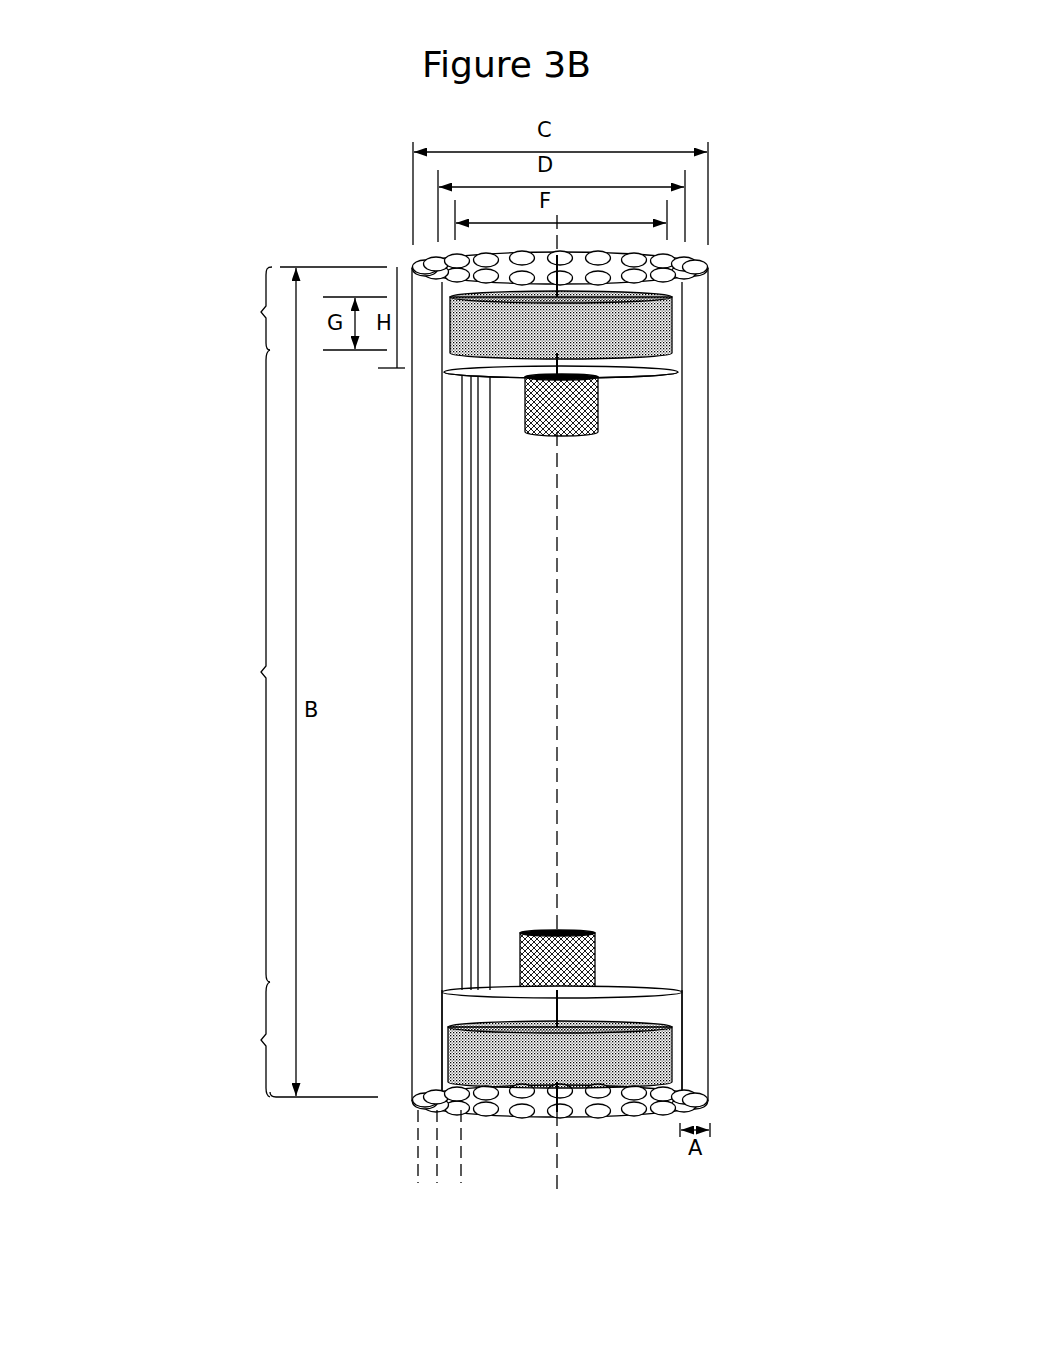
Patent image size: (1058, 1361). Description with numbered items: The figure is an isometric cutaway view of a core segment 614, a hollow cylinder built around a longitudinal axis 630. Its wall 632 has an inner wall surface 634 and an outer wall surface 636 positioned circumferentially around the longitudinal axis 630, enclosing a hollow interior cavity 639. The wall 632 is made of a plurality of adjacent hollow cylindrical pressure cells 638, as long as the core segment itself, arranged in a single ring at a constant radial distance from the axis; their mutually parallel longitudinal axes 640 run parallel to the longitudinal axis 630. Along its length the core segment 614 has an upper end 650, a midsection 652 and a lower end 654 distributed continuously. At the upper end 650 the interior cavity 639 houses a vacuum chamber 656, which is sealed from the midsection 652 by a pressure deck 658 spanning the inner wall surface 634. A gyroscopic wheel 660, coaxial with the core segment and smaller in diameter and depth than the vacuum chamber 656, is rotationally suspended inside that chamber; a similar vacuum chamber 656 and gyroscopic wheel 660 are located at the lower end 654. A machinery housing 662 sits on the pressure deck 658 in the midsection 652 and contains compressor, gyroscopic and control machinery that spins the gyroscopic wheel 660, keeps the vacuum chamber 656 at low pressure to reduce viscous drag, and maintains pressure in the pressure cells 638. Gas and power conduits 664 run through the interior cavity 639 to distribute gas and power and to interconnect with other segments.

The core segment 614 is at (172, 768).
The longitudinal axis 630 is at (567, 1170).
The wall 632 is at (712, 573).
The inner wall surface 634 is at (687, 942).
The outer wall surface 636 is at (710, 979).
The pressure cells 638 is at (708, 268).
The hollow interior cavity 639 is at (648, 893).
The longitudinal axes of pressure cells 640 is at (393, 1163).
The upper end 650 is at (237, 308).
The midsection 652 is at (231, 666).
The lower end 654 is at (230, 1039).
The vacuum chamber 656 is at (667, 361).
The pressure deck 658 is at (640, 378).
The gyroscopic wheel 660 is at (648, 338).
The machinery housing 662 is at (580, 410).
The gas and power conduits 664 is at (493, 832).